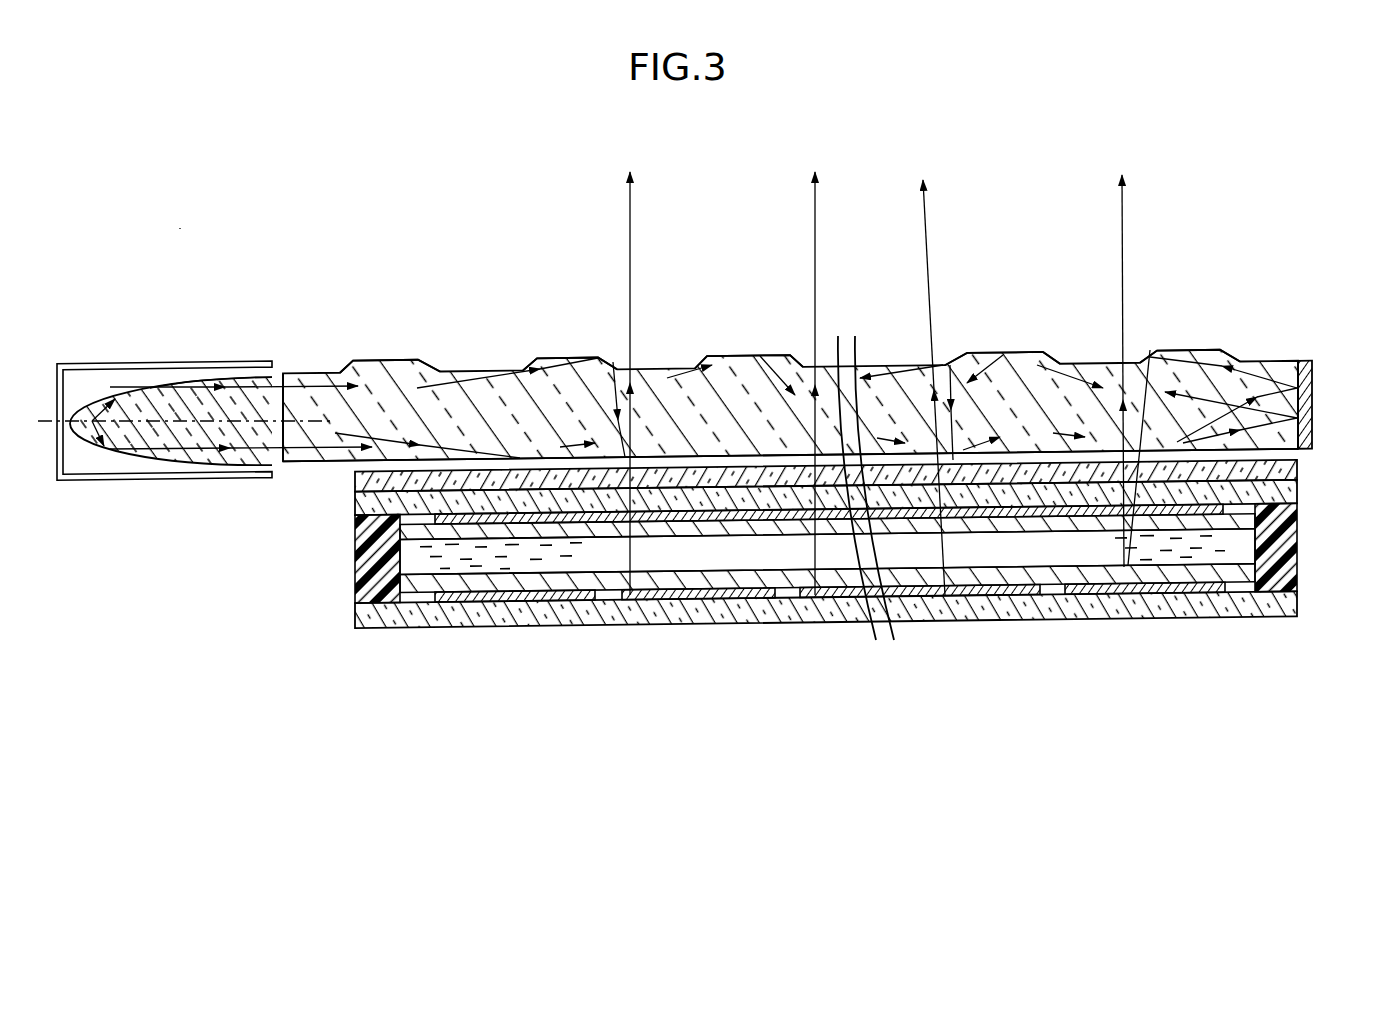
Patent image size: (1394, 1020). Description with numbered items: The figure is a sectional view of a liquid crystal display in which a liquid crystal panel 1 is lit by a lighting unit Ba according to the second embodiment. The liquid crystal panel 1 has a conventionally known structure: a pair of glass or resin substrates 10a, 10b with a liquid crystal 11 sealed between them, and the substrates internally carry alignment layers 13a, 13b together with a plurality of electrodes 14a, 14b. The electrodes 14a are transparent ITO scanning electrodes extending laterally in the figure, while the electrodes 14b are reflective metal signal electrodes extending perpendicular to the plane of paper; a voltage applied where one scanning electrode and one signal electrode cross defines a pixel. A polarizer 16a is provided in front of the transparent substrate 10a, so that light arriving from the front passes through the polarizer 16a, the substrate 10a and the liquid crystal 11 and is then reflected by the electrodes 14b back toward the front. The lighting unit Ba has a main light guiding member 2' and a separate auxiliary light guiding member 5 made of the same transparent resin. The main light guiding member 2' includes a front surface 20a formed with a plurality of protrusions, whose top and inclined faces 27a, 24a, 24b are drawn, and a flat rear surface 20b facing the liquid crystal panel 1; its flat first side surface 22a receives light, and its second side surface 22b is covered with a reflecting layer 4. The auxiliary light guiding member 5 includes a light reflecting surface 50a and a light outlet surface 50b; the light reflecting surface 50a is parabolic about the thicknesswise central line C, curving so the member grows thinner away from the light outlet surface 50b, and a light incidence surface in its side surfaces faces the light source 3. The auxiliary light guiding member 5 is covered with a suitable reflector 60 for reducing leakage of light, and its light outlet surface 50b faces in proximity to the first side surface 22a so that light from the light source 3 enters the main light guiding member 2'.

The liquid crystal panel 1 is at (235, 485).
The main light guiding member 2' is at (834, 390).
The light source 3 is at (190, 372).
The reflecting layer 4 is at (1305, 362).
The auxiliary light guiding member 5 is at (250, 368).
The substrate 10a is at (355, 504).
The substrate 10b is at (355, 621).
The liquid crystal 11 is at (355, 572).
The alignment layer 13a is at (355, 540).
The alignment layer 13b is at (355, 598).
The horizontal electrode 14a is at (793, 583).
The vertical electrode 14b is at (512, 605).
The polarizer 16a is at (355, 481).
The front surface 20a is at (655, 358).
The rear surface 20b is at (718, 457).
The first side surface 22a is at (281, 372).
The second side surface 22b is at (1313, 402).
The inclined surface 24a is at (1055, 364).
The inclined surface 24b is at (950, 355).
The flat top surface 27a is at (1013, 350).
The light reflecting surface 50a is at (153, 380).
The light outlet surface 50b is at (284, 400).
The reflector 60 is at (88, 365).
The thicknesswise central line C is at (42, 405).
The lighting unit Ba is at (343, 228).